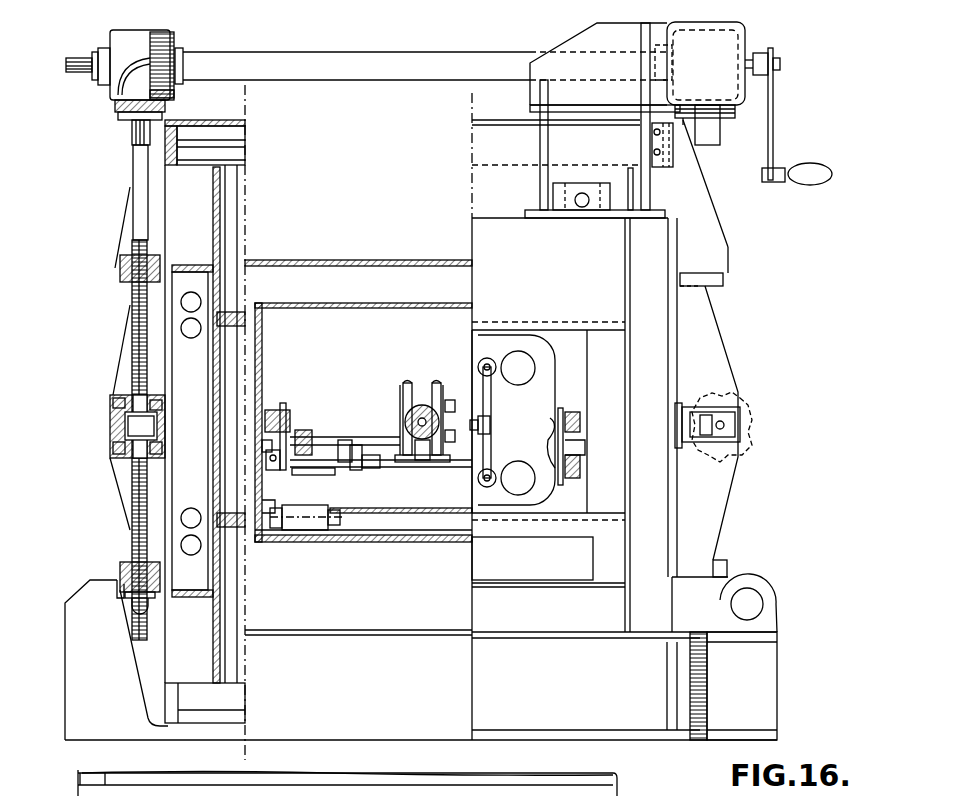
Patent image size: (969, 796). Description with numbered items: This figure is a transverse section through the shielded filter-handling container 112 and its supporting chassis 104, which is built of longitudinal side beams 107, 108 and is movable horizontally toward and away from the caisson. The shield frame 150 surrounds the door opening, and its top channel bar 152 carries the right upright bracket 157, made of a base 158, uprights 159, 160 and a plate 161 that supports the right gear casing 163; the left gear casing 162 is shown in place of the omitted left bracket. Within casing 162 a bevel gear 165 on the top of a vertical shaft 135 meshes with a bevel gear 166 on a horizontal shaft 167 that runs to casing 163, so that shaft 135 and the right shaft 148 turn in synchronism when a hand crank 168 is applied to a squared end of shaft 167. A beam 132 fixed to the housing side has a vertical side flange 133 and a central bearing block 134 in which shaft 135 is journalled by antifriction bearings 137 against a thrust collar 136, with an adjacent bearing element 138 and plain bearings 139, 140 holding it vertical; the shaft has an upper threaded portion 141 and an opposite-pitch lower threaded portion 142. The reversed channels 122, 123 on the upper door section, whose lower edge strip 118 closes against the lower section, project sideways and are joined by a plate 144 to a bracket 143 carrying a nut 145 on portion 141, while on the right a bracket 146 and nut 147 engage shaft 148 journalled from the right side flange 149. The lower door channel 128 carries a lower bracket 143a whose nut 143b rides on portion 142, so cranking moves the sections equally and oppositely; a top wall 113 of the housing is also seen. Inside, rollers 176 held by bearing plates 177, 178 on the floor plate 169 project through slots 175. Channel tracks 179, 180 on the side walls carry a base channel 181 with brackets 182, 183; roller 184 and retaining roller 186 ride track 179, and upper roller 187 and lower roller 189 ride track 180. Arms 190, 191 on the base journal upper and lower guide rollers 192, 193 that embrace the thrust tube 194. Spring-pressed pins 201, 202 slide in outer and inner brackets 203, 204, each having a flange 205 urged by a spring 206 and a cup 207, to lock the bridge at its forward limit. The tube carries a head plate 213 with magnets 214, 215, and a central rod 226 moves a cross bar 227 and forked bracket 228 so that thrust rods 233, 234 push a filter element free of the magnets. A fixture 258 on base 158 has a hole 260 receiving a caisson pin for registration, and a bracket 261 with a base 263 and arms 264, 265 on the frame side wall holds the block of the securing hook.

The chassis 104 is at (435, 646).
The longitudinal side beam 107 is at (762, 682).
The longitudinal side beam 108 is at (672, 688).
The container 112 is at (400, 549).
The top wall 113 is at (346, 309).
The lower edge strip 118 is at (231, 327).
The reversed channel 122 is at (225, 118).
The reversed channel 123 is at (234, 160).
The reversed channel 128 is at (220, 724).
The beam 132 is at (208, 470).
The vertical side flange 133 is at (118, 385).
The central bearing block 134 is at (118, 448).
The shaft 135 is at (131, 300).
The thrust collar 136 is at (150, 424).
The antifriction bearings 137 is at (152, 405).
The bearing 138 is at (156, 448).
The plain bearing 139 is at (120, 405).
The plain bearing 140 is at (128, 452).
The upper threaded portion 141 is at (138, 329).
The lower threaded portion 142 is at (130, 546).
The bracket 143 is at (157, 222).
The left lower bracket 143a is at (143, 670).
The nut 143b is at (120, 590).
The plate 144 is at (167, 166).
The nut 145 is at (120, 279).
The bracket 146 is at (717, 232).
The nut 147 is at (724, 281).
The shaft 148 is at (713, 145).
The right side flange 149 is at (707, 340).
The frame 150 is at (640, 491).
The top horizontal channel bar 152 is at (608, 265).
The right bracket 157 is at (528, 146).
The base 158 is at (533, 212).
The upright 159 is at (547, 155).
The upright 160 is at (642, 195).
The plate 161 is at (563, 100).
The gear casing 162 is at (118, 95).
The right gear casing 163 is at (732, 108).
The bevel gear 165 is at (174, 98).
The bevel gear 166 is at (172, 48).
The horizontal shaft 167 is at (340, 80).
The hand crank 168 is at (773, 134).
The floor plate 169 is at (398, 534).
The slots 175 is at (270, 505).
The roller 176 is at (296, 532).
The bearing plate 177 is at (268, 530).
The bearing plate 178 is at (340, 527).
The track 179 is at (262, 445).
The track 180 is at (585, 446).
The base channel 181 is at (402, 468).
The bracket 182 is at (286, 404).
The bracket 183 is at (562, 487).
The roller 184 is at (278, 410).
The retaining roller 186 is at (274, 471).
The upper roller 187 is at (572, 412).
The lower roller 189 is at (580, 468).
The arm 190 is at (400, 415).
The arm 191 is at (440, 395).
The upper guide roller 192 is at (419, 394).
The lower guide roller 193 is at (455, 447).
The thrust tube 194 is at (450, 430).
The spring-pressed pin 201 is at (316, 440).
The spring-pressed pin 202 is at (552, 428).
The outer bracket 203 is at (322, 476).
The inner bracket 204 is at (370, 468).
The flange 205 is at (343, 440).
The spring 206 is at (352, 470).
The cup 207 is at (304, 430).
The head plate 213 is at (542, 383).
The magnet 214 is at (514, 376).
The magnet 215 is at (520, 487).
The rod 226 is at (408, 426).
The cross bar 227 is at (480, 432).
The forked bracket 228 is at (483, 376).
The thrust rod 233 is at (487, 358).
The thrust rod 234 is at (478, 482).
The fixture 258 is at (610, 184).
The hole 260 is at (582, 207).
The bracket 261 is at (678, 405).
The base 263 is at (676, 425).
The arm 264 is at (720, 395).
The arm 265 is at (708, 442).